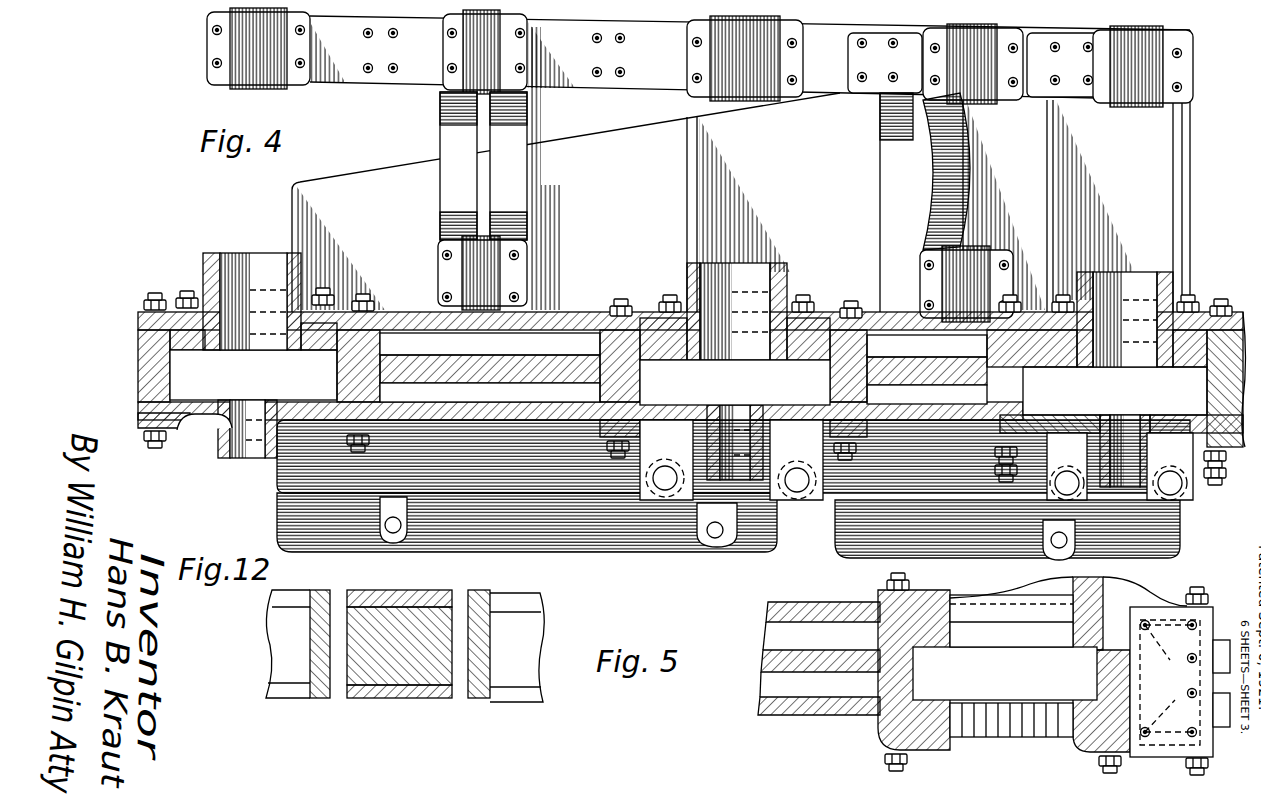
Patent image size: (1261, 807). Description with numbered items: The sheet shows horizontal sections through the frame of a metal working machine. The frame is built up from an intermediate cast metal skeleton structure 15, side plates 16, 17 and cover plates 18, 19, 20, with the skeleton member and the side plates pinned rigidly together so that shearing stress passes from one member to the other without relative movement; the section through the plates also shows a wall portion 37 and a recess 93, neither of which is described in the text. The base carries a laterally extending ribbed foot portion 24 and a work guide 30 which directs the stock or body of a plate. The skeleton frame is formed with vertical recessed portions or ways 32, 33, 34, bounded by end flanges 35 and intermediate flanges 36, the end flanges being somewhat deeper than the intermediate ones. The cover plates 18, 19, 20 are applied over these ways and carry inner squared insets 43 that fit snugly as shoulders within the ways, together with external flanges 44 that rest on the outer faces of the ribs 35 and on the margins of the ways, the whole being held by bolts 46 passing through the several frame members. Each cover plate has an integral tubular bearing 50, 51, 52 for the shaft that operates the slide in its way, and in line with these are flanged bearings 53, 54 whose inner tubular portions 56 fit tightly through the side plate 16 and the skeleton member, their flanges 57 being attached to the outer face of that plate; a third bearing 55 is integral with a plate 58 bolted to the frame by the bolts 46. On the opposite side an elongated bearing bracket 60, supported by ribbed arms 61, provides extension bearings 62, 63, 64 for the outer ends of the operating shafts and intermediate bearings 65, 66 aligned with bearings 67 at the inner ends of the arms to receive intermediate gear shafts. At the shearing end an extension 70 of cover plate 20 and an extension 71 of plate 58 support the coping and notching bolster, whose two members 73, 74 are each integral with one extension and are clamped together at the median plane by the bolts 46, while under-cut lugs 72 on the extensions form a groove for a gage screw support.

In FIG. 4, the intermediate cast metal skeleton structure 15 is at (524, 360).
In FIG. 12, the intermediate cast metal skeleton structure 15 is at (398, 668).
In FIG. 5, the intermediate cast metal skeleton structure 15 is at (762, 664).
In FIG. 4, the side plate 16 is at (578, 305).
In FIG. 12, the side plate 16 is at (432, 585).
In FIG. 5, the side plate 16 is at (795, 717).
In FIG. 4, the side plate 17 is at (530, 410).
In FIG. 12, the side plate 17 is at (480, 700).
In FIG. 5, the side plate 17 is at (816, 598).
In FIG. 4, the cover plate 18 is at (277, 430).
In FIG. 4, the cover plate 19 is at (660, 410).
In FIG. 4, the cover plate 20 is at (1060, 420).
In FIG. 5, the cover plate 20 is at (942, 740).
In FIG. 4, the ribbed foot portion 24 is at (578, 142).
In FIG. 4, the work guide 30 is at (1160, 400).
In FIG. 4, the recessed portion 32 is at (225, 430).
In FIG. 4, the recessed portion 33 is at (981, 399).
In FIG. 5, the recessed portion 34 is at (1005, 692).
In FIG. 4, the end flange 35 is at (138, 395).
In FIG. 4, the intermediate flange 36 is at (382, 392).
In FIG. 12, the side wall 37 is at (462, 652).
In FIG. 4, the squared inset 43 is at (825, 412).
In FIG. 4, the external flange 44 is at (142, 428).
In FIG. 4, the bolt 46 is at (155, 295).
In FIG. 5, the bolt 46 is at (1213, 587).
In FIG. 4, the tubular bearing 50 is at (250, 458).
In FIG. 4, the tubular bearing 51 is at (765, 522).
In FIG. 4, the tubular bearing 52 is at (1178, 548).
In FIG. 4, the flanged bearing 53 is at (245, 256).
In FIG. 4, the flanged bearing 54 is at (772, 277).
In FIG. 4, the third bearing 55 is at (1157, 277).
In FIG. 4, the inner tubular portion 56 is at (292, 322).
In FIG. 4, the flange 57 is at (333, 300).
In FIG. 4, the plate 58 is at (1196, 305).
In FIG. 5, the plate 58 is at (945, 595).
In FIG. 4, the elongated bearing bracket 60 is at (655, 84).
In FIG. 4, the ribbed arm 61 is at (893, 165).
In FIG. 4, the extension bearing 62 is at (240, 80).
In FIG. 4, the extension bearing 63 is at (753, 88).
In FIG. 4, the extension bearing 64 is at (1140, 100).
In FIG. 4, the intermediate bearing 65 is at (440, 94).
In FIG. 4, the intermediate bearing 66 is at (990, 98).
In FIG. 4, the bearing 67 is at (455, 287).
In FIG. 5, the extension 70 is at (1150, 757).
In FIG. 5, the extension 71 is at (1160, 608).
In FIG. 5, the under-cut lug 72 is at (1167, 657).
In FIG. 5, the bolster member 73 is at (1161, 727).
In FIG. 5, the bolster member 74 is at (1185, 652).
In FIG. 4, the recess 93 is at (174, 398).